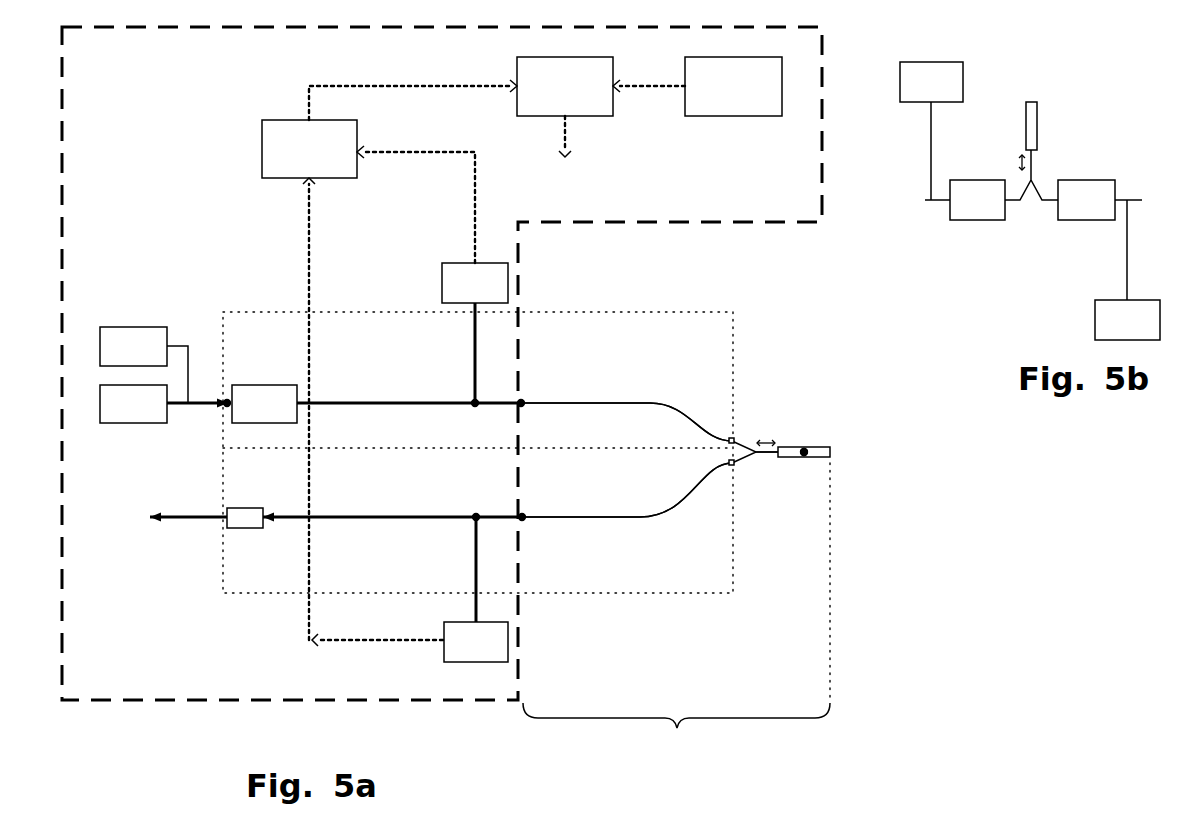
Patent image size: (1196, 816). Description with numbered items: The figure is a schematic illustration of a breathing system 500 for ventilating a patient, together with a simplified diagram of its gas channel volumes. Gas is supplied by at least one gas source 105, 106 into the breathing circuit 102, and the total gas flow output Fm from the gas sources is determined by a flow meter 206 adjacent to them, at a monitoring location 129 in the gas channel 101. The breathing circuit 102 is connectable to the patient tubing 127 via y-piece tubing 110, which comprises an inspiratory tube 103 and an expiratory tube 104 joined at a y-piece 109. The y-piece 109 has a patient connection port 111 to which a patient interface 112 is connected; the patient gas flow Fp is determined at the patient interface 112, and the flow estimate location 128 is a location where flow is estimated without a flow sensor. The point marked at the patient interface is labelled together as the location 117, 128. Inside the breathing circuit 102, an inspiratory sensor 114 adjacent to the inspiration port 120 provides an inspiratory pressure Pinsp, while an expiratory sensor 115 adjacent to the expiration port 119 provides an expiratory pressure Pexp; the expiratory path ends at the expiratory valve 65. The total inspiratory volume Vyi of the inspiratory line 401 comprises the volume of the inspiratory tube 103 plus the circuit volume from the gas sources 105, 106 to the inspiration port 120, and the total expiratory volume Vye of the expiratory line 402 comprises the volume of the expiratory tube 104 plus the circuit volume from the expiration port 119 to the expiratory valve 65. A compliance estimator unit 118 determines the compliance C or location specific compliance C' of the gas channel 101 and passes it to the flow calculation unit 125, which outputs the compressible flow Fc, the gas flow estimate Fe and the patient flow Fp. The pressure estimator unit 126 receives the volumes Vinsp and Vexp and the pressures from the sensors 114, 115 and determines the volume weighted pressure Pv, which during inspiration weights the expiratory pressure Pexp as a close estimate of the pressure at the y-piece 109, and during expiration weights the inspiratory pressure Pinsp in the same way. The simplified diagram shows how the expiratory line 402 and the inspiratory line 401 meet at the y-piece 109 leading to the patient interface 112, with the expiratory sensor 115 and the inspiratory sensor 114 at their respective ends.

In FIG. 5a, the expiratory valve 65 is at (242, 529).
In FIG. 5a, the gas channel 101 is at (405, 395).
In FIG. 5a, the breathing circuit 102 is at (175, 703).
In FIG. 5a, the inspiratory tube 103 is at (672, 413).
In FIG. 5a, the expiratory tube 104 is at (668, 504).
In FIG. 5a, the gas source 105 is at (144, 365).
In FIG. 5a, the gas source 106 is at (164, 394).
In FIG. 5a, the y-piece 109 is at (755, 447).
In FIG. 5b, the y-piece 109 is at (1036, 186).
In FIG. 5a, the y-piece tubing 110 is at (690, 390).
In FIG. 5a, the patient connection port 111 is at (770, 460).
In FIG. 5a, the patient interface 112 is at (830, 452).
In FIG. 5b, the patient interface 112 is at (1032, 102).
In FIG. 5a, the inspiratory sensor 114 is at (475, 335).
In FIG. 5b, the inspiratory sensor 114 is at (1102, 270).
In FIG. 5a, the expiratory sensor 115 is at (476, 588).
In FIG. 5b, the expiratory sensor 115 is at (950, 131).
In FIG. 5a, the sensor 117 is at (806, 458).
In FIG. 5a, the compliance estimator unit 118 is at (697, 86).
In FIG. 5a, the expiration port 119 is at (527, 522).
In FIG. 5a, the inspiration port 120 is at (522, 398).
In FIG. 5a, the flow calculation unit 125 is at (565, 126).
In FIG. 5a, the pressure estimator unit 126 is at (371, 354).
In FIG. 5a, the patient tubing 127 is at (676, 627).
In FIG. 5a, the flow estimate location 128 is at (804, 452).
In FIG. 5a, the monitoring location 129 is at (226, 408).
In FIG. 5a, the flow meter 206 is at (376, 404).
In FIG. 5a, the inspiratory line 401 is at (575, 312).
In FIG. 5b, the inspiratory line 401 is at (1100, 219).
In FIG. 5a, the expiratory line 402 is at (558, 595).
In FIG. 5b, the expiratory line 402 is at (977, 219).
In FIG. 5a, the breathing system 500 is at (938, 675).